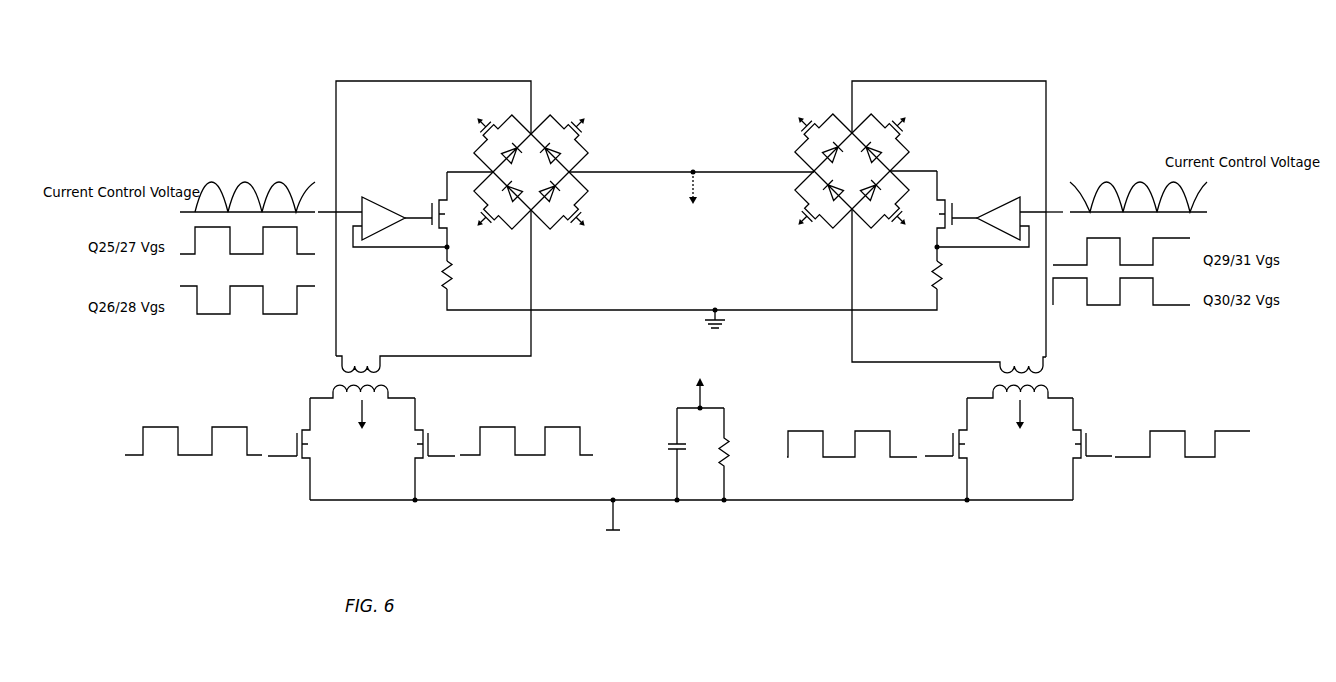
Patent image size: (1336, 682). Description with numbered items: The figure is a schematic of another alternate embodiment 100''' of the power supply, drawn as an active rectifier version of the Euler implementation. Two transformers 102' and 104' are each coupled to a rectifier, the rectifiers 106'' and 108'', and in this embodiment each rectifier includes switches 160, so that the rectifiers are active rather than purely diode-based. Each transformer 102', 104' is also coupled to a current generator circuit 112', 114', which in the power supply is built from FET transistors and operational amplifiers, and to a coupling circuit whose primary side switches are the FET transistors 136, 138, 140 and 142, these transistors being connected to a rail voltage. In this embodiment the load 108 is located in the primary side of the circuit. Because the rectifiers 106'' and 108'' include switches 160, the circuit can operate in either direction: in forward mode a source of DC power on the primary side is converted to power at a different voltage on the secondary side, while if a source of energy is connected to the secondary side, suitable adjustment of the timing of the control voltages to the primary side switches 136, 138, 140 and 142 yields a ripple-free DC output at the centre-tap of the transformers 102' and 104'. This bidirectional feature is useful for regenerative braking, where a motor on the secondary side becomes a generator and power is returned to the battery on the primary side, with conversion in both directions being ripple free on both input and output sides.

The power supply 100''' is at (706, 323).
The switches 160 is at (539, 108).
The current generator circuit 112' is at (382, 192).
The current generator circuit 114' is at (991, 197).
The rectifier 106'' is at (539, 192).
The rectifier 108'' is at (847, 194).
The transformer 102' is at (380, 402).
The transformer 104' is at (1048, 396).
The load 108 is at (658, 446).
The FET transistor 136 is at (296, 445).
The FET transistor 138 is at (430, 447).
The FET transistor 140 is at (952, 443).
The FET transistor 142 is at (1088, 443).